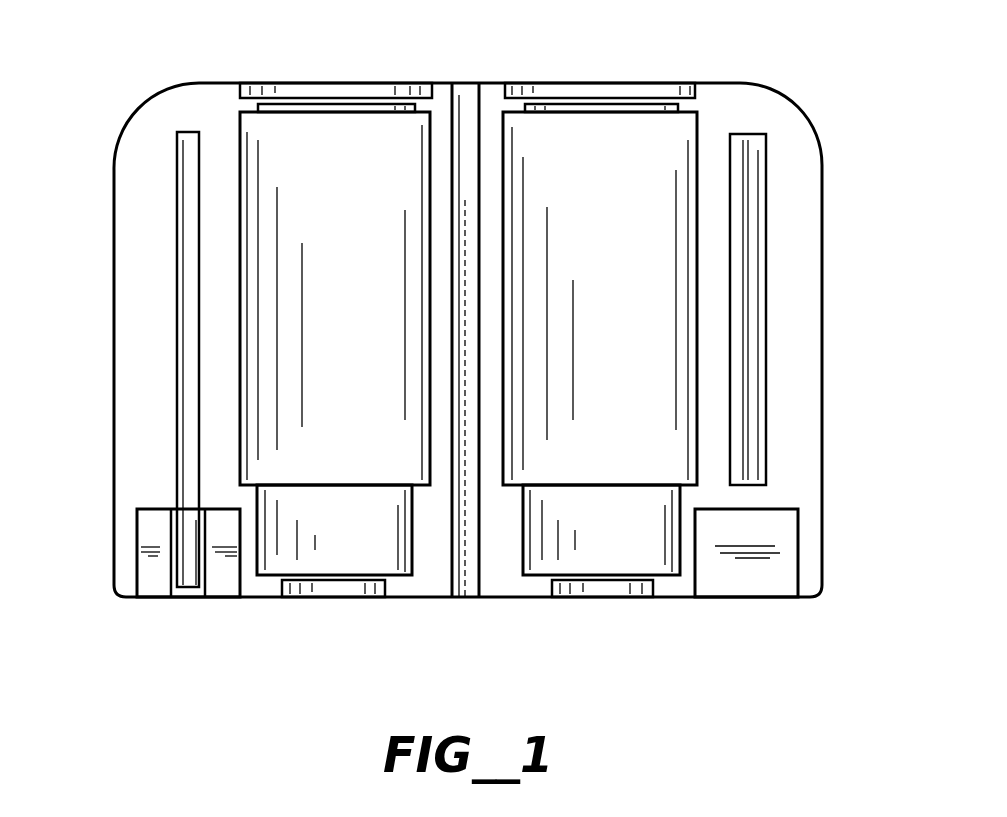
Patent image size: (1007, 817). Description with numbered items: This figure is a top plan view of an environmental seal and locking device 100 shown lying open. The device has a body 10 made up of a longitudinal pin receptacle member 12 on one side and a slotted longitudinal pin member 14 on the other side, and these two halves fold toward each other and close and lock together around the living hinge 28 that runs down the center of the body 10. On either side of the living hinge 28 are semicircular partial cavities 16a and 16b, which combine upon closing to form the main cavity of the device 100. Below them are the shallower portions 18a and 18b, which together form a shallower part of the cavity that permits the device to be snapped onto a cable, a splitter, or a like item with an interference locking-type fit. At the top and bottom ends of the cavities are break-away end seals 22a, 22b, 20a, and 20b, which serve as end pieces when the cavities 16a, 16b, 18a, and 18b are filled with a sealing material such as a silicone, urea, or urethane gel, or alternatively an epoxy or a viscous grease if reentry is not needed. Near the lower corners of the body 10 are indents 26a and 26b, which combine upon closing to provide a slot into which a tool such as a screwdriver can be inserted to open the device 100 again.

The body 10 is at (146, 463).
The environmental seal and locking device 100 is at (832, 502).
The longitudinal pin receptacle member 12 is at (185, 190).
The slotted longitudinal pin member 14 is at (757, 183).
The semicircular partial cavity 16a is at (615, 333).
The semicircular partial cavity 16b is at (300, 306).
The shallower cavity portion 18a is at (630, 533).
The shallower cavity portion 18b is at (315, 522).
The break-away end seal 20a is at (593, 588).
The break-away end seal 20b is at (342, 588).
The break-away end seal 22a is at (615, 105).
The break-away end seal 22b is at (340, 105).
The indent 26a is at (762, 575).
The indent 26b is at (152, 567).
The living hinge 28 is at (465, 115).